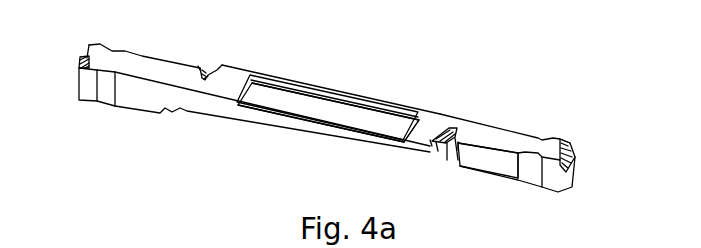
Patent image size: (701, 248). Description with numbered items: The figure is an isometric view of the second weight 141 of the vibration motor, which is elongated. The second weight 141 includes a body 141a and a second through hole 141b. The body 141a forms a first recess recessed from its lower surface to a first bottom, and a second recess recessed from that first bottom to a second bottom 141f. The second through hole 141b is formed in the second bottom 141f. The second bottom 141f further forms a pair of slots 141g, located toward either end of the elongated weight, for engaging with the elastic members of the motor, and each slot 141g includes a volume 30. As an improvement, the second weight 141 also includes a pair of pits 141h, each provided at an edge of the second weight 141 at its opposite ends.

The second weight 141 is at (348, 66).
The body 141a is at (515, 141).
The second through hole 141b is at (306, 105).
The second bottom 141f is at (430, 118).
The slot 141g is at (202, 78).
The pit 141h is at (84, 64).
The volume 30 is at (213, 74).